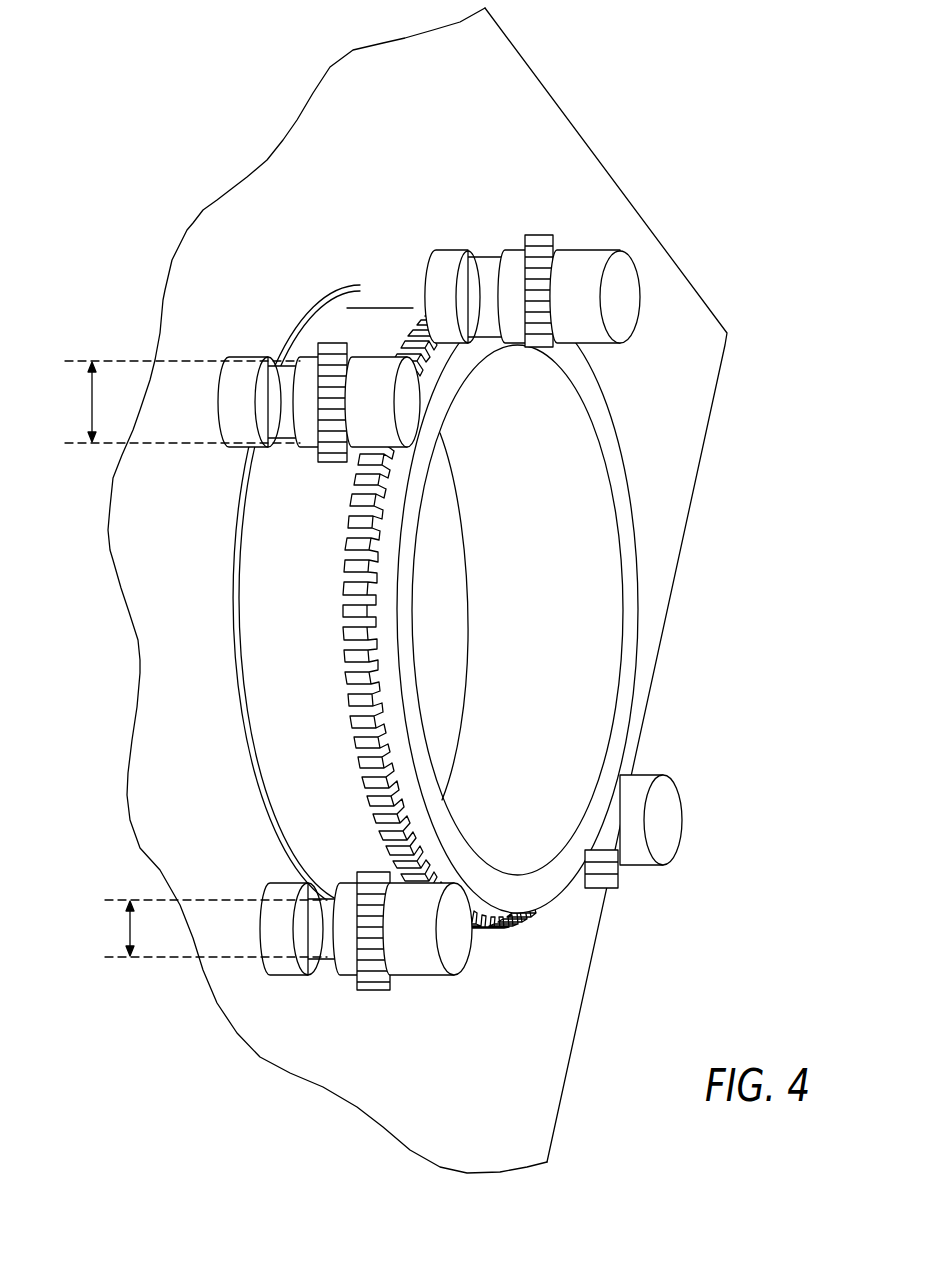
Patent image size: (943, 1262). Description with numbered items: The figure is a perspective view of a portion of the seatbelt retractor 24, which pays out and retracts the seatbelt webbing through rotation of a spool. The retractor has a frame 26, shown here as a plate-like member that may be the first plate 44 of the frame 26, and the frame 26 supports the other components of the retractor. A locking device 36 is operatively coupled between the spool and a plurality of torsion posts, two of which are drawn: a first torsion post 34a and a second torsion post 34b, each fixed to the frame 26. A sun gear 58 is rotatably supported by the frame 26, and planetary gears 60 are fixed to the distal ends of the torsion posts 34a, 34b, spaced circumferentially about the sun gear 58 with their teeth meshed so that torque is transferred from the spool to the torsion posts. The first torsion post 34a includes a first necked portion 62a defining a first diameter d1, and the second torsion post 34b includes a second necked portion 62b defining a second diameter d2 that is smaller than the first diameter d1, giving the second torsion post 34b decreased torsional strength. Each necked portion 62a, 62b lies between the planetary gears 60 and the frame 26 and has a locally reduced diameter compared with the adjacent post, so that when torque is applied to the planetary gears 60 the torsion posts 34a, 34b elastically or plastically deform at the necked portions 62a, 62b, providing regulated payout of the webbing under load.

The seatbelt retractor 24 is at (690, 50).
The frame 26 is at (476, 50).
The first torsion post 34a is at (243, 357).
The second torsion post 34b is at (648, 775).
The locking device 36 is at (440, 572).
The first plate 44 is at (518, 125).
The sun gear 58 is at (343, 717).
The planetary gears 60 is at (348, 343).
The first necked portion 62a is at (284, 448).
The second necked portion 62b is at (330, 962).
The first diameter d1 is at (182, 402).
The second diameter d2 is at (216, 928).